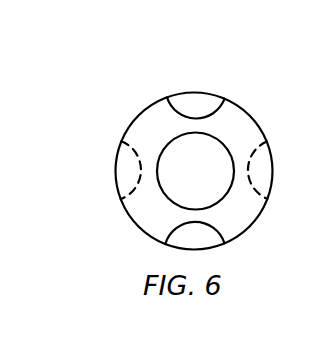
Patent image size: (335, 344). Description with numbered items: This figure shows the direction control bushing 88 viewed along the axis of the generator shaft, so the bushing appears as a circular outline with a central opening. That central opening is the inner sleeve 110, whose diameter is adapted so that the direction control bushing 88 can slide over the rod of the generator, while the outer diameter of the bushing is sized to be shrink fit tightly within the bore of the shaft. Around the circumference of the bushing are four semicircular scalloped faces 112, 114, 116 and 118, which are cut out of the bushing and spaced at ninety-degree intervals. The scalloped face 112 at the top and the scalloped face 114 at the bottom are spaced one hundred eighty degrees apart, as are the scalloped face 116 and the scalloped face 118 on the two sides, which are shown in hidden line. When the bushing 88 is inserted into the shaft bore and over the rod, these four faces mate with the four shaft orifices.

The direction control bushing 88 is at (130, 96).
The inner sleeve 110 is at (170, 148).
The semicircular scalloped face 112 is at (183, 102).
The semicircular scalloped face 114 is at (210, 240).
The semicircular scalloped face 116 is at (273, 165).
The semicircular scalloped face 118 is at (115, 172).